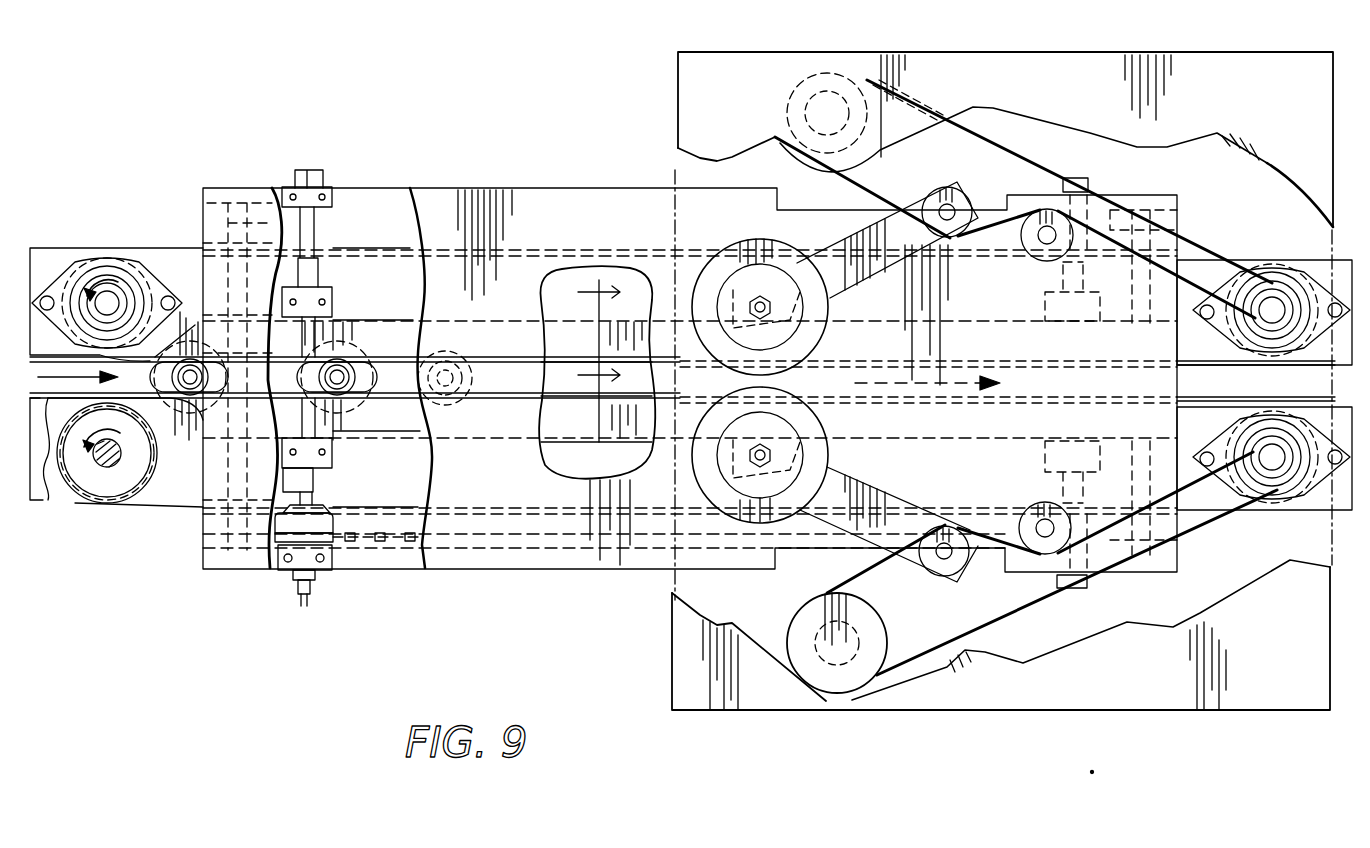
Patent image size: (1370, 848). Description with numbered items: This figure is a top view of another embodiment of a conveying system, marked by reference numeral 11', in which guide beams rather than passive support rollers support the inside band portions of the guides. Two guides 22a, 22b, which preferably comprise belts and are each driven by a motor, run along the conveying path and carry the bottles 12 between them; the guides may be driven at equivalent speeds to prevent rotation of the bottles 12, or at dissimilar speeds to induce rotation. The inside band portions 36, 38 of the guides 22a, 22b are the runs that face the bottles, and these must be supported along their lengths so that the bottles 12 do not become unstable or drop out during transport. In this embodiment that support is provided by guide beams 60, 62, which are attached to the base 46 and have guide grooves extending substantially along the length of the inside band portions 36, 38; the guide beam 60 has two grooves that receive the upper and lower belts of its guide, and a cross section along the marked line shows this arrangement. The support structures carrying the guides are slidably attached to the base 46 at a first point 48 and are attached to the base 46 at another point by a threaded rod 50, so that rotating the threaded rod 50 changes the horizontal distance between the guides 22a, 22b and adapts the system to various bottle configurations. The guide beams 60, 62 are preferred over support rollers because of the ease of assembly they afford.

The conveying system 11' is at (1002, 359).
The guide 22a is at (96, 247).
The guide 22b is at (96, 505).
The guide beam 60 is at (195, 318).
The guide beam 62 is at (185, 460).
The bottle 12 is at (374, 338).
The inside band portion 36 is at (405, 357).
The inside band portion 38 is at (521, 363).
The base 46 is at (397, 570).
The threaded rod 50 is at (303, 606).
The first point 48 is at (1072, 592).